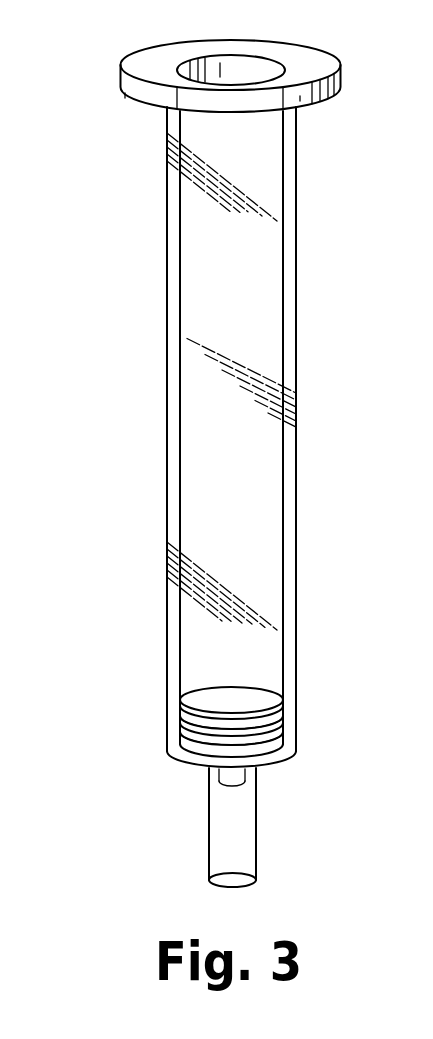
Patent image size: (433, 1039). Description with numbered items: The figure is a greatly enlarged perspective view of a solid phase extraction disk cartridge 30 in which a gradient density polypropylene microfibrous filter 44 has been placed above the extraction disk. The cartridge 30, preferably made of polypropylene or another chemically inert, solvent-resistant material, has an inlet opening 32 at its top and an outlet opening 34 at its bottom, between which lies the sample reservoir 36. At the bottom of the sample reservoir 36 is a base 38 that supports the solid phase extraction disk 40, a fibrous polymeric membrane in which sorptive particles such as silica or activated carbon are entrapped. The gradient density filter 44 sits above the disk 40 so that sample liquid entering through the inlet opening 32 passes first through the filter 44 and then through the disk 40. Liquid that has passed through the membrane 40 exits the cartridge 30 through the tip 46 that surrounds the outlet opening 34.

The solid phase extraction disk cartridge 30 is at (120, 76).
The inlet opening 32 is at (243, 68).
The outlet opening 34 is at (230, 787).
The sample reservoir 36 is at (254, 283).
The base 38 is at (192, 747).
The solid phase extraction disk 40 is at (236, 738).
The gradient density polypropylene microfibrous filter 44 is at (227, 698).
The tip 46 is at (230, 890).